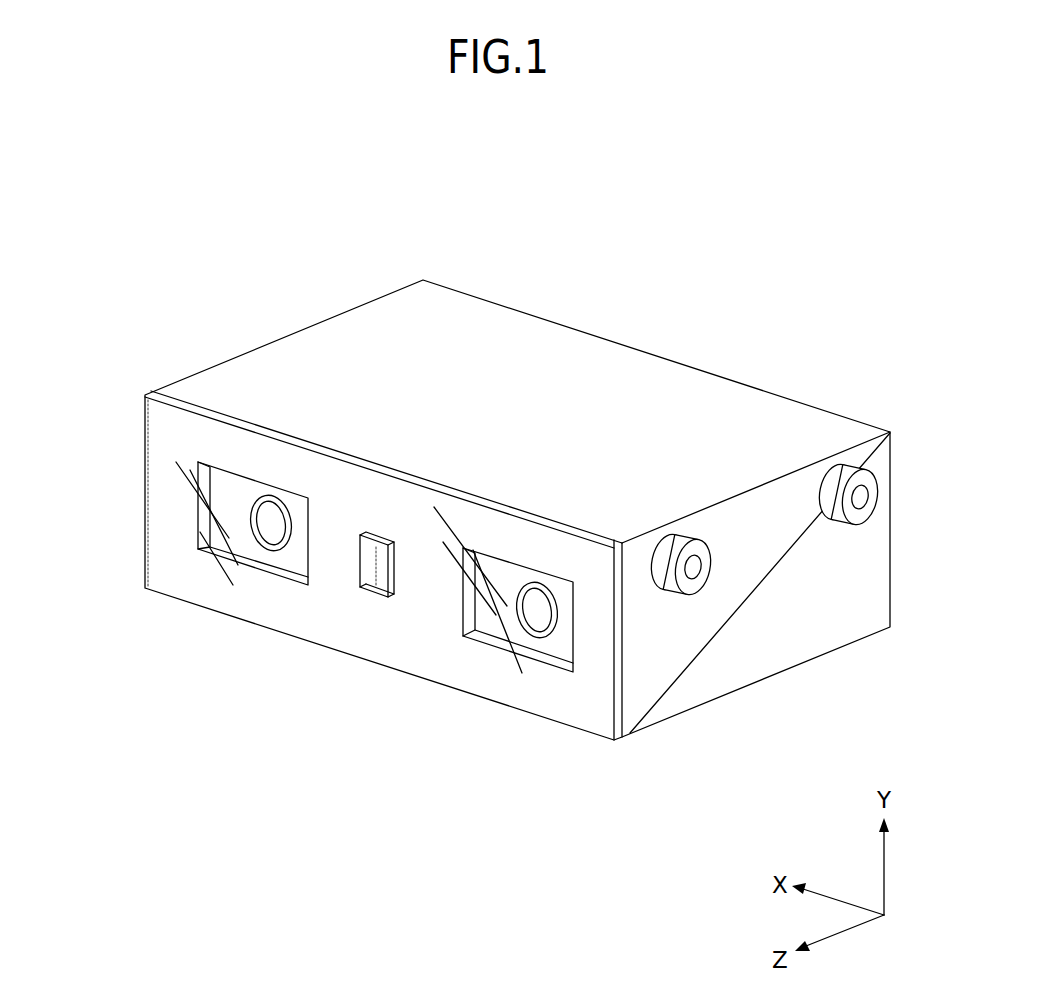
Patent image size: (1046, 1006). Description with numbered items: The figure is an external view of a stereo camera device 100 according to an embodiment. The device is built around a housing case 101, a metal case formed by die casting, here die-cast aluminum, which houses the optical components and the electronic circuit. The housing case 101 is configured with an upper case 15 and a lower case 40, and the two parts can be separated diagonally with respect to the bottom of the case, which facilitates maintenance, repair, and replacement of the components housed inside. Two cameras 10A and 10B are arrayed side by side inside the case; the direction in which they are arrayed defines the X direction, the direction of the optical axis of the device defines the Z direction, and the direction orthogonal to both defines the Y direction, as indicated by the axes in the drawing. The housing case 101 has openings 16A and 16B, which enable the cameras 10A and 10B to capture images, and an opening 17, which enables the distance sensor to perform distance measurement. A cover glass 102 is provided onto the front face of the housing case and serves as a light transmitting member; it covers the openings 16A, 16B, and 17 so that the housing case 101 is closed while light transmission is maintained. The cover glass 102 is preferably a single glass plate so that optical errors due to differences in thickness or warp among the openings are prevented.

The stereo camera device 100 is at (215, 181).
The housing case 101 is at (953, 288).
The upper case 15 is at (799, 430).
The lower case 40 is at (877, 583).
The cover glass 102 is at (146, 484).
The camera 10A is at (537, 610).
The camera 10B is at (280, 509).
The opening 16A is at (560, 640).
The opening 16B is at (300, 555).
The opening 17 is at (382, 570).